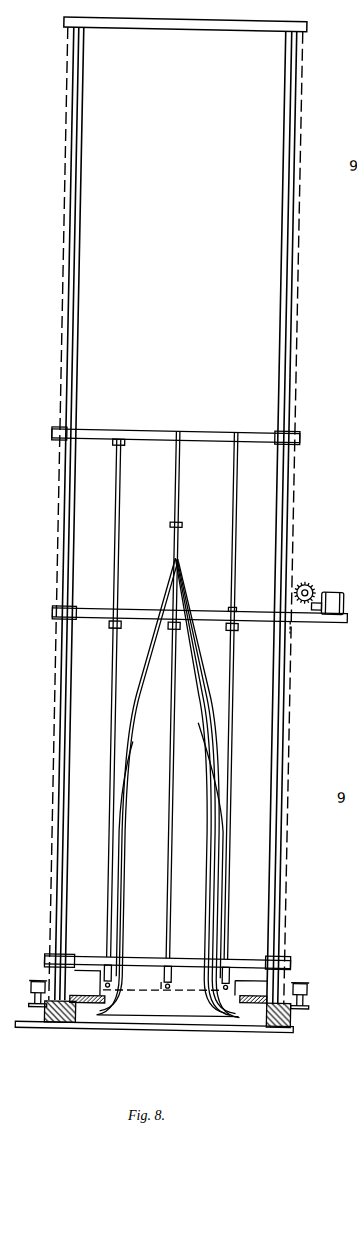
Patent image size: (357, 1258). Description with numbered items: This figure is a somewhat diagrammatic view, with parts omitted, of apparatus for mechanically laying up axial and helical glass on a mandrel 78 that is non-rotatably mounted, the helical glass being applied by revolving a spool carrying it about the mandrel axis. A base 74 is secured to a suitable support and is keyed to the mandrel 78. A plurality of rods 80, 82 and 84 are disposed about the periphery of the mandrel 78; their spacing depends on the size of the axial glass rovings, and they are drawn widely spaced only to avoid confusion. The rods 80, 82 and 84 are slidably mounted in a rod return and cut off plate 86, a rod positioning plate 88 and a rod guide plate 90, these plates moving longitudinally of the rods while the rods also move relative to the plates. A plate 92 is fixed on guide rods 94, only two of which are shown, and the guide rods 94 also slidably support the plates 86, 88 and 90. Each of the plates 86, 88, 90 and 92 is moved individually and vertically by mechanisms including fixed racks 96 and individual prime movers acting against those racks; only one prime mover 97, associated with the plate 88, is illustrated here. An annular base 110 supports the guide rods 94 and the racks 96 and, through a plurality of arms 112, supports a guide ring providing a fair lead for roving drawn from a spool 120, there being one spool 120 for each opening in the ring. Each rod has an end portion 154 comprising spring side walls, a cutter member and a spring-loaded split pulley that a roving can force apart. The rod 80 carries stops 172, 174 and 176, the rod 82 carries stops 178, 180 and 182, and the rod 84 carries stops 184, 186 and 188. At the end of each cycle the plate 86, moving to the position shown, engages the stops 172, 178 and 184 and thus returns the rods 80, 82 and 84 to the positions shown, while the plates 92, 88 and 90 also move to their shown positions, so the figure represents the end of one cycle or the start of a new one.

The base 74 is at (191, 1018).
The mandrel 78 is at (170, 890).
The rod 80 is at (129, 565).
The rod 82 is at (187, 500).
The rod 84 is at (245, 506).
The rod return and cut off plate 86 is at (108, 957).
The rod positioning plate 88 is at (212, 611).
The rod guide plate 90 is at (157, 440).
The plate 92 is at (65, 965).
The guide rods 94 is at (85, 97).
The fixed racks 96 is at (69, 97).
The prime mover 97 is at (339, 587).
The annular base 110 is at (70, 1026).
The arms 112 is at (92, 1003).
The spool 120 is at (49, 993).
The end portion 154 is at (177, 986).
The stop 172 is at (129, 966).
The stop 174 is at (121, 626).
The stop 176 is at (123, 444).
The stop 178 is at (187, 964).
The stop 180 is at (192, 626).
The stop 182 is at (192, 522).
The stop 184 is at (246, 964).
The stop 186 is at (246, 628).
The stop 188 is at (246, 609).